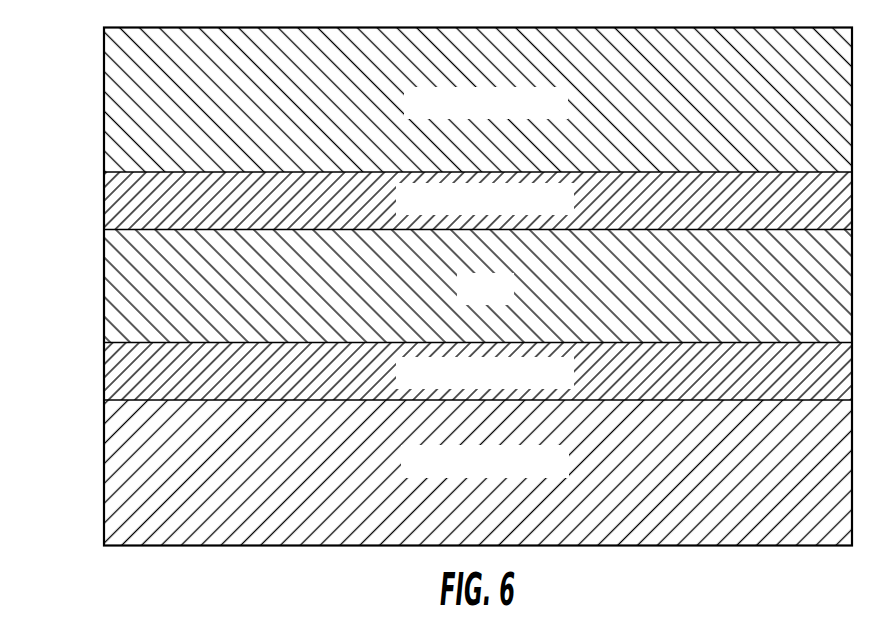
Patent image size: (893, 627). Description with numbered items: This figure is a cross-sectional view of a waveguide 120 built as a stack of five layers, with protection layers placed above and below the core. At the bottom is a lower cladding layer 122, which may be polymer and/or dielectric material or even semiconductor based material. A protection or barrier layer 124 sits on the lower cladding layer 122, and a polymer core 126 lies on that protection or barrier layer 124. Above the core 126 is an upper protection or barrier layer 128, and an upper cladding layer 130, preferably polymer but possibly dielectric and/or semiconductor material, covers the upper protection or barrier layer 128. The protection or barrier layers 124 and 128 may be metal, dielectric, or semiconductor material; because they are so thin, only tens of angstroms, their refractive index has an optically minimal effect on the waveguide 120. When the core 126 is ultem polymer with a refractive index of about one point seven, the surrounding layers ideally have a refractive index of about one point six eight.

The waveguide 120 is at (65, 42).
The lower cladding layer 122 is at (104, 476).
The protection or barrier layer 124 is at (104, 372).
The core 126 is at (104, 282).
The upper protection or barrier layer 128 is at (104, 189).
The upper cladding layer 130 is at (104, 99).